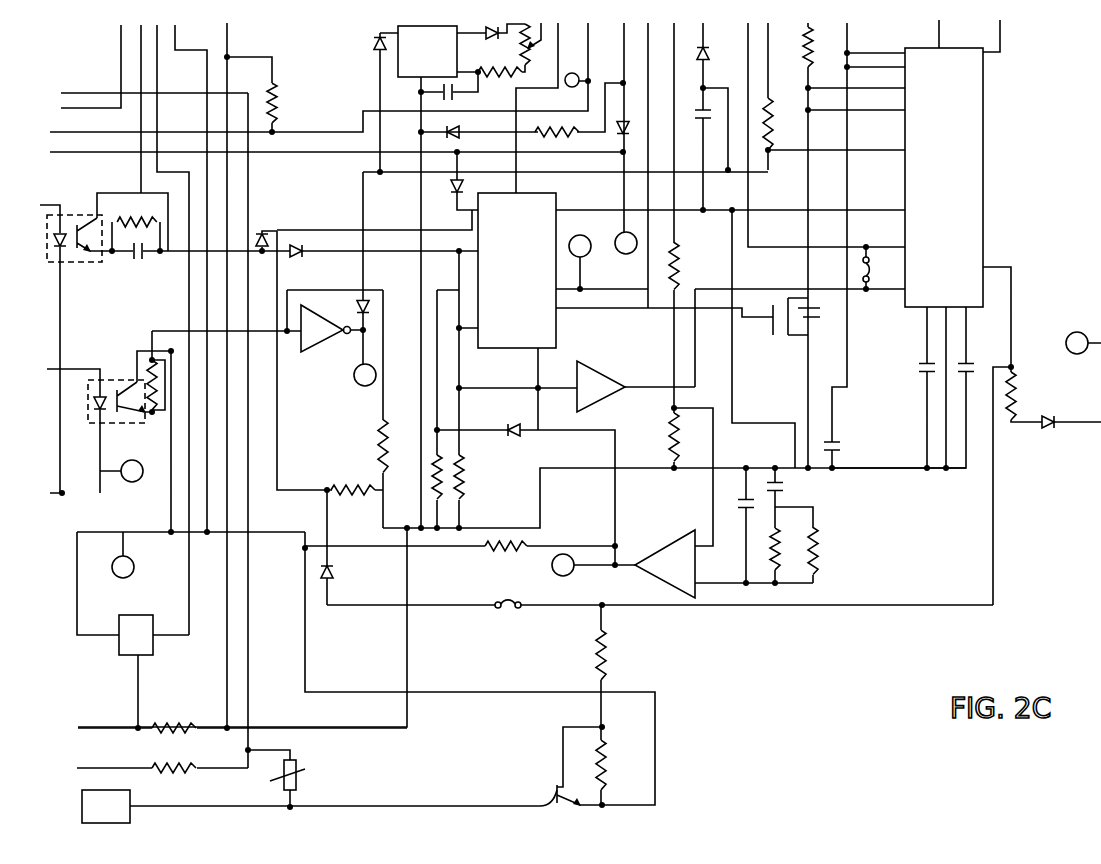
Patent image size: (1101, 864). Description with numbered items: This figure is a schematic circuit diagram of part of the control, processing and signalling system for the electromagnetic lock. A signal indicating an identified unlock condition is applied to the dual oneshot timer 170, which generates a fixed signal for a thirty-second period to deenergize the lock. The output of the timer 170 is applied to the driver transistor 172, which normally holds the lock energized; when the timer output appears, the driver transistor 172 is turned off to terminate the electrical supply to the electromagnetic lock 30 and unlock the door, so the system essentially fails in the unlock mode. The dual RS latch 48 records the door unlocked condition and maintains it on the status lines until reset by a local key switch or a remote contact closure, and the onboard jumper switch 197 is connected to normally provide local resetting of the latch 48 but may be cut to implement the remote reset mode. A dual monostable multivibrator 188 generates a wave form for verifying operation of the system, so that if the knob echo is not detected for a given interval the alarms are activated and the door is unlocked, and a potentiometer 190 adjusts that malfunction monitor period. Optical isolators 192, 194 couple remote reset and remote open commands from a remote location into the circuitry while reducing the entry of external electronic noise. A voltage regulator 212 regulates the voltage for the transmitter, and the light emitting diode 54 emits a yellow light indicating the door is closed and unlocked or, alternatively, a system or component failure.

The dual monostable multivibrator 188 is at (395, 58).
The potentiometer 190 is at (520, 46).
The light emitting diode 54 is at (458, 126).
The optical isolator 192 is at (68, 213).
The optical isolator 194 is at (115, 380).
The dual RS latch 48 is at (540, 326).
The dual oneshot timer 170 is at (970, 185).
The voltage regulator 212 is at (148, 643).
The electromagnetic lock 30 is at (125, 803).
The driver transistor 172 is at (552, 787).
The onboard jumper switch 197 is at (510, 598).